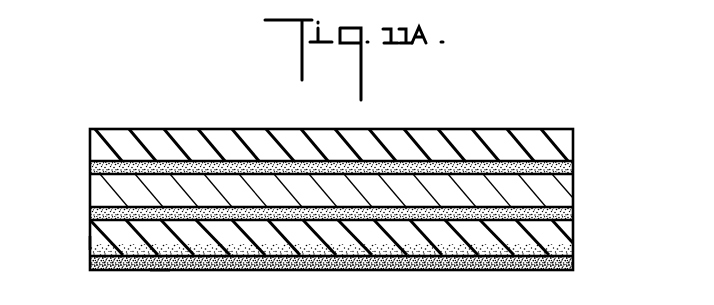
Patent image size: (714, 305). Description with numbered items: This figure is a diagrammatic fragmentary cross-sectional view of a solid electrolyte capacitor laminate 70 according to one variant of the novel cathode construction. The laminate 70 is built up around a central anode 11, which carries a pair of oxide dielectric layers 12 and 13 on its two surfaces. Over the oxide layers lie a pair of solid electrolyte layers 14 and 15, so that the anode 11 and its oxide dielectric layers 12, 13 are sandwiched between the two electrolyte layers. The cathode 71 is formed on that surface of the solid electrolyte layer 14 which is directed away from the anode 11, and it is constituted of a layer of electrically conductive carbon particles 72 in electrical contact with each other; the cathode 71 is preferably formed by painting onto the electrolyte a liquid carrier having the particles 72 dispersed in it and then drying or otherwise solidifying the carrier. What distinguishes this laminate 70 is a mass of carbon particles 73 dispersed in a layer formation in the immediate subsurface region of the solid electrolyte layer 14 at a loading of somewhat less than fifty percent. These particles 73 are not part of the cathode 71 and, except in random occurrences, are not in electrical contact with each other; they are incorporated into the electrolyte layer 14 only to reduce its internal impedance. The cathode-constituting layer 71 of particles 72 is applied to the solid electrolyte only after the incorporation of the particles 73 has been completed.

The laminate 70 is at (433, 123).
The solid electrolyte layer 15 is at (559, 143).
The oxide dielectric layer 13 is at (574, 166).
The anode 11 is at (563, 189).
The oxide dielectric layer 12 is at (574, 213).
The solid electrolyte layer 14 is at (563, 233).
The cathode 71 is at (574, 262).
The carbon particles 73 is at (90, 243).
The electrically conductive carbon particles 72 is at (151, 267).